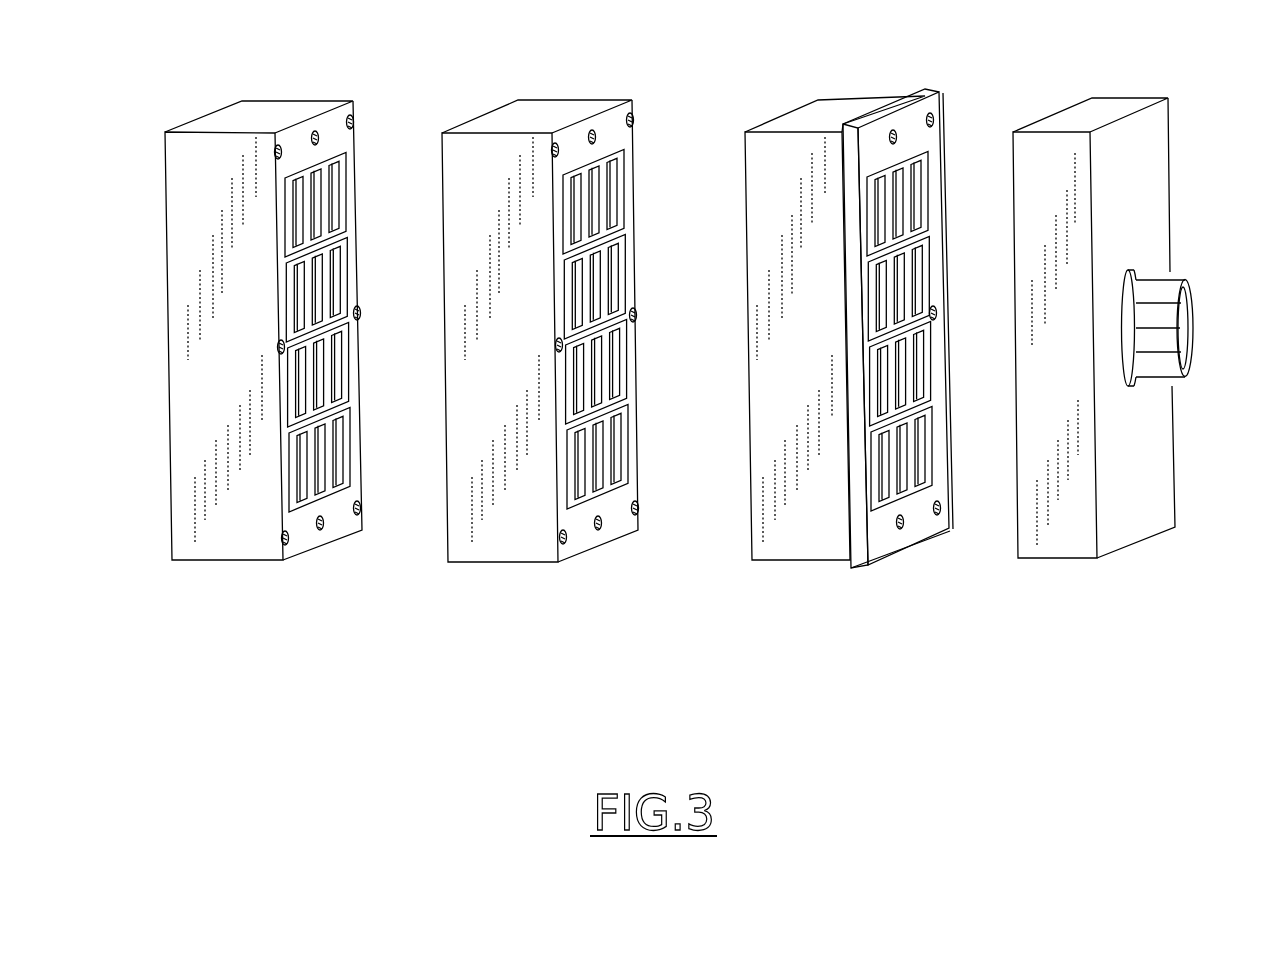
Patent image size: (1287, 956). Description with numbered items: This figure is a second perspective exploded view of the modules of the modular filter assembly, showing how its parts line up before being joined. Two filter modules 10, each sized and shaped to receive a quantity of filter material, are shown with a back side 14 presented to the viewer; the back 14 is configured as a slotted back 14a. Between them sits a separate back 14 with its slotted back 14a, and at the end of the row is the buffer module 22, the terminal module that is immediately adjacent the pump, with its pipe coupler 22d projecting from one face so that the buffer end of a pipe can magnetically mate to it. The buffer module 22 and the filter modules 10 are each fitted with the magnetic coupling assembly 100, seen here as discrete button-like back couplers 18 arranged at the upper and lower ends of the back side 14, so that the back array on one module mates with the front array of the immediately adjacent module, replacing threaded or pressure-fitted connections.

The magnetic coupling assembly 100 is at (573, 581).
The filter module 10 is at (222, 547).
The back side 14 is at (675, 140).
The slotted back 14a is at (337, 198).
The back coupler 18 is at (628, 109).
The buffer module 22 is at (1064, 552).
The pipe coupler 22d is at (1183, 282).